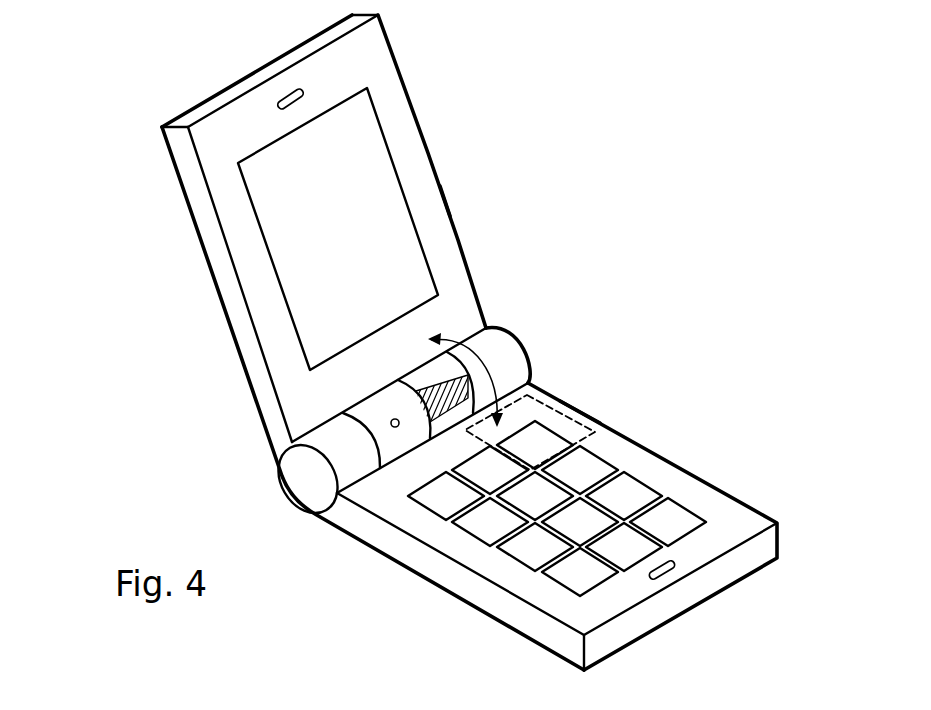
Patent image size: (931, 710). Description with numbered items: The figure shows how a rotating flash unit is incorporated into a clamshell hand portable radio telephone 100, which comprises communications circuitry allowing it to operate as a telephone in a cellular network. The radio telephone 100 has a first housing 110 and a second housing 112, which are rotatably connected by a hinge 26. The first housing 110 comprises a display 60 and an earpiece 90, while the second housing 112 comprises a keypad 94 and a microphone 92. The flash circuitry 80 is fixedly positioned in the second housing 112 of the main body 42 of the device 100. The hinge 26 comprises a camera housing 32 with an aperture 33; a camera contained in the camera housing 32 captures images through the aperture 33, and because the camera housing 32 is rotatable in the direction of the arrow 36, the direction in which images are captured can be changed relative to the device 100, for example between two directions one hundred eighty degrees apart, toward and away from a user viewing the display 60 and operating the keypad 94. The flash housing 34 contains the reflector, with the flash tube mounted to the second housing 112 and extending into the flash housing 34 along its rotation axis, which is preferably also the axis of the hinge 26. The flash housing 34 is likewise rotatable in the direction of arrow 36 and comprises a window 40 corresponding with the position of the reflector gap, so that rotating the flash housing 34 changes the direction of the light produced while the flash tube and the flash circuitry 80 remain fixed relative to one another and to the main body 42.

The clamshell hand portable radio telephone 100 is at (712, 382).
The first housing 110 is at (204, 181).
The second housing 112 is at (742, 500).
The main body 42 is at (428, 153).
The display 60 is at (375, 108).
The earpiece 90 is at (287, 93).
The microphone 92 is at (675, 570).
The keypad 94 is at (557, 585).
The flash circuitry 80 is at (610, 422).
The hinge 26 is at (470, 333).
The camera housing 32 is at (377, 405).
The aperture 33 is at (393, 419).
The flash housing 34 is at (427, 377).
The arrow 36 is at (485, 372).
The window 40 is at (380, 402).